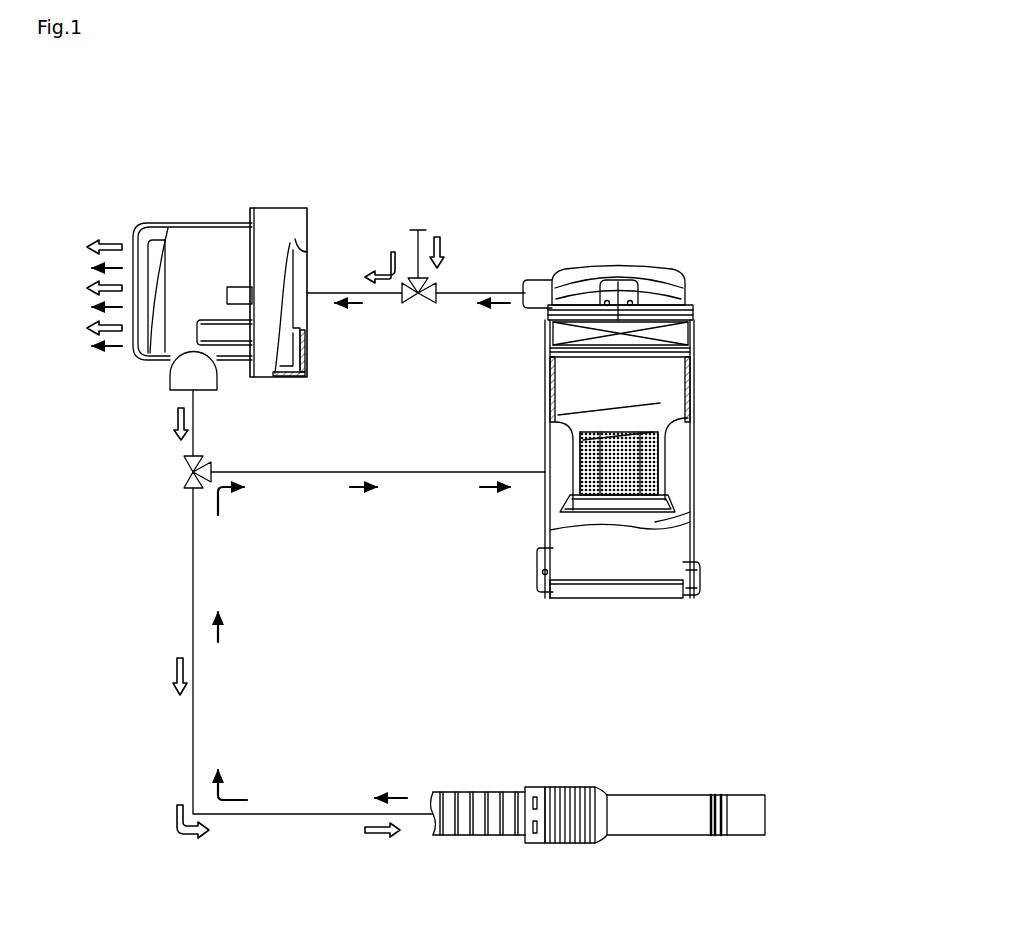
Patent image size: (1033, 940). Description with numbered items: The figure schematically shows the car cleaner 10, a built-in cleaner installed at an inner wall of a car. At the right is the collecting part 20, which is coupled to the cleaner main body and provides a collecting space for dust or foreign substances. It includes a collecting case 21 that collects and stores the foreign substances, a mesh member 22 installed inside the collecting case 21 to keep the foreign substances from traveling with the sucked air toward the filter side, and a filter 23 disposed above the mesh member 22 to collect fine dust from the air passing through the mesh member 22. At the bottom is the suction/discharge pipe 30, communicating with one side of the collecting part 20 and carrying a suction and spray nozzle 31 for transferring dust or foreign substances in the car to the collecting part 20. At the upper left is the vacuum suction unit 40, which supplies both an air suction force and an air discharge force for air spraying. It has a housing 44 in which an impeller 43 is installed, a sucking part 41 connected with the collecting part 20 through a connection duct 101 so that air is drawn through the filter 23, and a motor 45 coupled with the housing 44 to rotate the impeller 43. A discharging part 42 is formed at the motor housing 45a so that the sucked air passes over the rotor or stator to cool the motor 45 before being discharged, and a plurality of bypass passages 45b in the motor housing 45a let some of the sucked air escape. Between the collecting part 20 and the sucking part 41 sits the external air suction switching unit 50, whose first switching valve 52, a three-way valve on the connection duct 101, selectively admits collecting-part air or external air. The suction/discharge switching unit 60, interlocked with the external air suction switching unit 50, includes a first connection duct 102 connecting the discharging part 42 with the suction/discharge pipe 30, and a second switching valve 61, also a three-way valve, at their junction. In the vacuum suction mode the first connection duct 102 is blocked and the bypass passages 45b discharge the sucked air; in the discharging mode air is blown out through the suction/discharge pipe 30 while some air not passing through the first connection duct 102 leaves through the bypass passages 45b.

The car cleaner 10 is at (665, 150).
The collecting part 20 is at (700, 428).
The collecting case 21 is at (690, 548).
The mesh member 22 is at (660, 470).
The filter 23 is at (683, 332).
The suction/discharge pipe 30 is at (320, 795).
The suction and spray nozzle 31 is at (653, 832).
The vacuum suction unit 40 is at (253, 165).
The sucking part 41 is at (314, 266).
The discharging part 42 is at (122, 228).
The impeller 43 is at (283, 363).
The housing 44 is at (286, 212).
The motor 45 is at (213, 212).
The motor housing 45a is at (146, 360).
The bypass passages 45b is at (133, 308).
The external air suction switching unit 50 is at (450, 273).
The first switching valve 52 is at (426, 305).
The suction/discharge switching unit 60 is at (163, 490).
The second switching valve 61 is at (186, 488).
The connection duct 101 is at (500, 291).
The first connection duct 102 is at (183, 450).